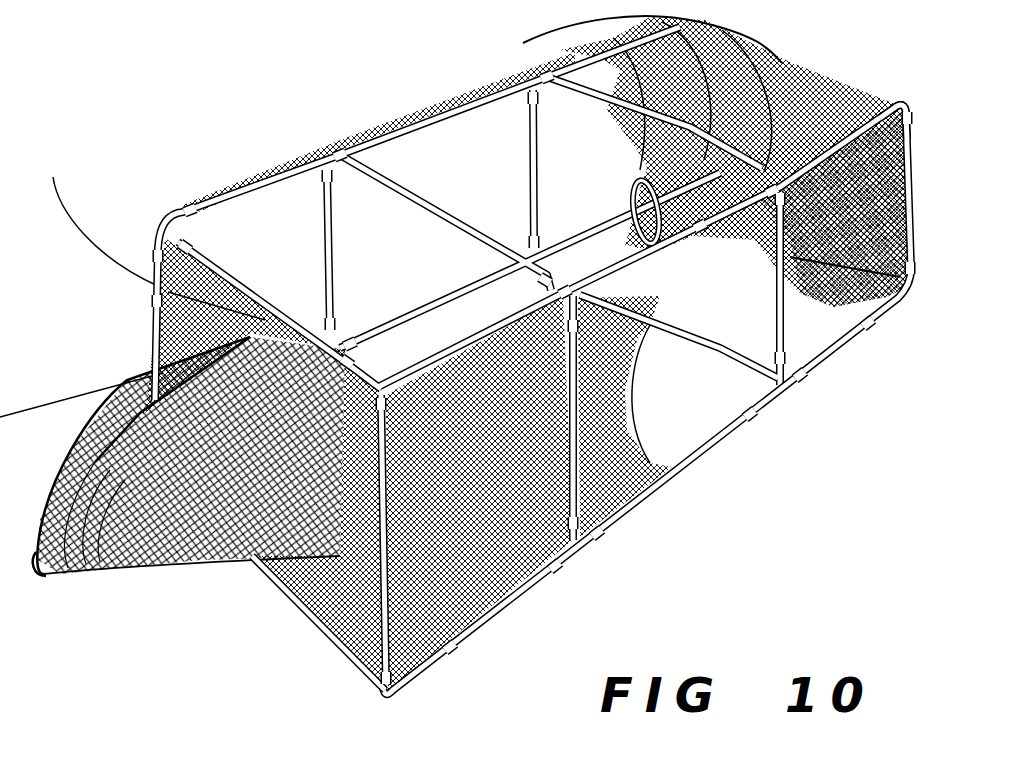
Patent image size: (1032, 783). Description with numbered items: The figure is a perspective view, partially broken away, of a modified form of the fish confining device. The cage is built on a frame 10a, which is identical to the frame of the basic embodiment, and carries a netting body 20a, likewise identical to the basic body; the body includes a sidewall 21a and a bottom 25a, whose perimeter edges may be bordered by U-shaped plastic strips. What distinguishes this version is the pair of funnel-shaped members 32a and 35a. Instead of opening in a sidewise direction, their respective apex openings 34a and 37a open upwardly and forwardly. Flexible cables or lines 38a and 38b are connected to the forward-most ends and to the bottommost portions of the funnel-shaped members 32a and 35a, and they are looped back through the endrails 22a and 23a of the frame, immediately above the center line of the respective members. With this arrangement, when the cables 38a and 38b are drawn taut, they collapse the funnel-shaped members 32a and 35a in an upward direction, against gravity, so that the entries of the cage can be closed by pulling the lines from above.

The frame 10a is at (406, 118).
The body 20a is at (457, 640).
The sidewall 21a is at (607, 112).
The endrail 22a is at (853, 84).
The endrail 23a is at (310, 594).
The bottom 25a is at (840, 302).
The funnel-shaped member 32a is at (742, 238).
The apex opening 34a is at (652, 205).
The funnel-shaped member 35a is at (202, 560).
The apex opening 37a is at (60, 566).
The flexible cable or line 38a is at (84, 206).
The flexible cable or line 38b is at (509, 36).